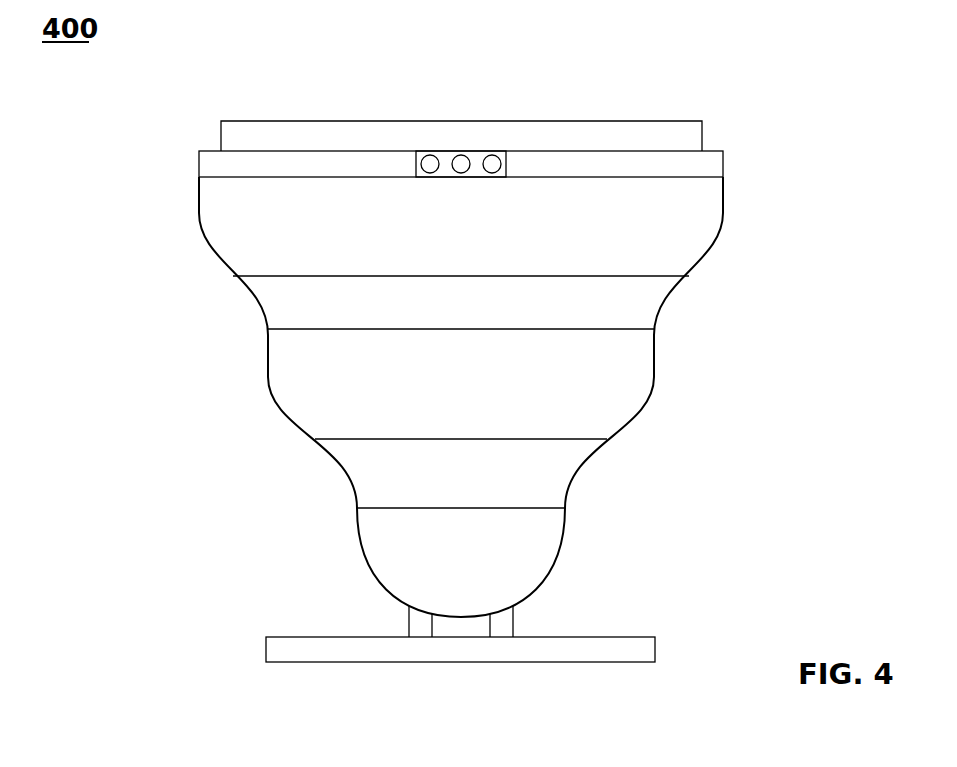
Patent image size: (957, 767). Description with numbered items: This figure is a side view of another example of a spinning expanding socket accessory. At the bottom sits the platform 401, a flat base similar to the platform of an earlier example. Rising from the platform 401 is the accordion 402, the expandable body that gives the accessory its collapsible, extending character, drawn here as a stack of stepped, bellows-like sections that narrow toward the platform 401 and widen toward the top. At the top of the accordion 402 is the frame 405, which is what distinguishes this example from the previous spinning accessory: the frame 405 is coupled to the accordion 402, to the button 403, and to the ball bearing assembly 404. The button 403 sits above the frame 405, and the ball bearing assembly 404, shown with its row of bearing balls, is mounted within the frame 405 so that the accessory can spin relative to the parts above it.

The platform 401 is at (293, 652).
The accordion 402 is at (617, 389).
The button 403 is at (656, 150).
The ball bearing assembly 404 is at (500, 152).
The frame 405 is at (269, 163).